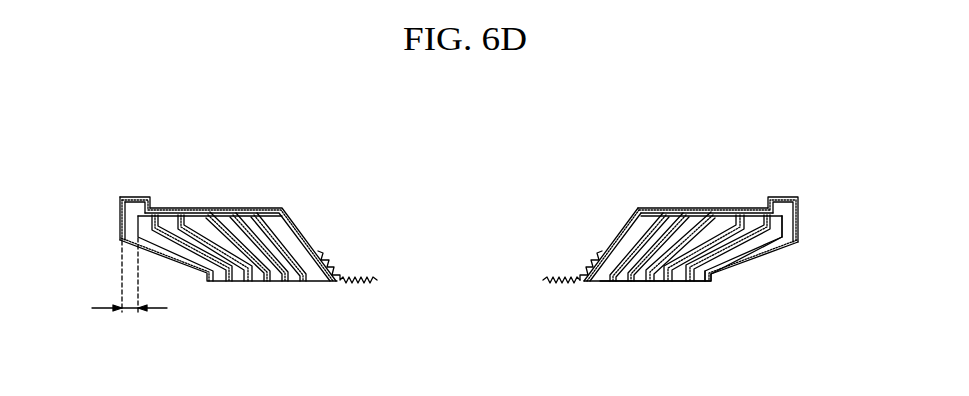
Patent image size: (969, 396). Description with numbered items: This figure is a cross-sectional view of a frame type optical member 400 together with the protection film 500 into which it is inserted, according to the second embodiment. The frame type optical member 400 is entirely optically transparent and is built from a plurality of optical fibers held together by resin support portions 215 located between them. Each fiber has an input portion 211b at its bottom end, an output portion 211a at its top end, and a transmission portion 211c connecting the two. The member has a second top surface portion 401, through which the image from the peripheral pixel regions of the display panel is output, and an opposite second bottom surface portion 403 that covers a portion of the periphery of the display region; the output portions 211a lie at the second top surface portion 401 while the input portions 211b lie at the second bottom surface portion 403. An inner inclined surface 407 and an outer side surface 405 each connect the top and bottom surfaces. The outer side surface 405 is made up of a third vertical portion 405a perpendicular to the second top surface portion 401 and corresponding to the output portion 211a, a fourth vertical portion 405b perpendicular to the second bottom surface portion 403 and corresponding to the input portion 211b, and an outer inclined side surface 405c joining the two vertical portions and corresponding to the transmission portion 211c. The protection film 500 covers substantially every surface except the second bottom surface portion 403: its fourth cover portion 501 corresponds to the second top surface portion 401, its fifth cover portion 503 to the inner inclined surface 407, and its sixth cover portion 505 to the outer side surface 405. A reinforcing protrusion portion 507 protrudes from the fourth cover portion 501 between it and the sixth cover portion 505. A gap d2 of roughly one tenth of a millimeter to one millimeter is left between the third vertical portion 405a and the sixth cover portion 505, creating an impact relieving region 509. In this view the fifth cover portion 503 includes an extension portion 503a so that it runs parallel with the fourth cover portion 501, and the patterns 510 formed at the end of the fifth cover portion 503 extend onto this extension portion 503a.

The protection film 500 is at (170, 197).
The reinforcing protrusion portion 507 is at (128, 193).
The impact relieving region 509 is at (113, 221).
The output portion 211a is at (196, 218).
The input portion 211b is at (256, 283).
The transmission portion 211c is at (220, 283).
The resin support portion 215 is at (306, 283).
The gap d2 is at (124, 286).
The frame type optical member 400 is at (621, 318).
The second top surface portion 401 is at (723, 214).
The second bottom surface portion 403 is at (677, 284).
The outer side surface 405 is at (802, 263).
The third vertical portion 405a is at (784, 224).
The fourth vertical portion 405b is at (713, 283).
The outer inclined side surface 405c is at (745, 258).
The inner inclined surface 407 is at (603, 240).
The fourth cover portion 501 is at (676, 207).
The fifth cover portion 503 is at (632, 208).
The extension portion 503a is at (552, 293).
The sixth cover portion 505 is at (802, 205).
The patterns 510 is at (565, 252).